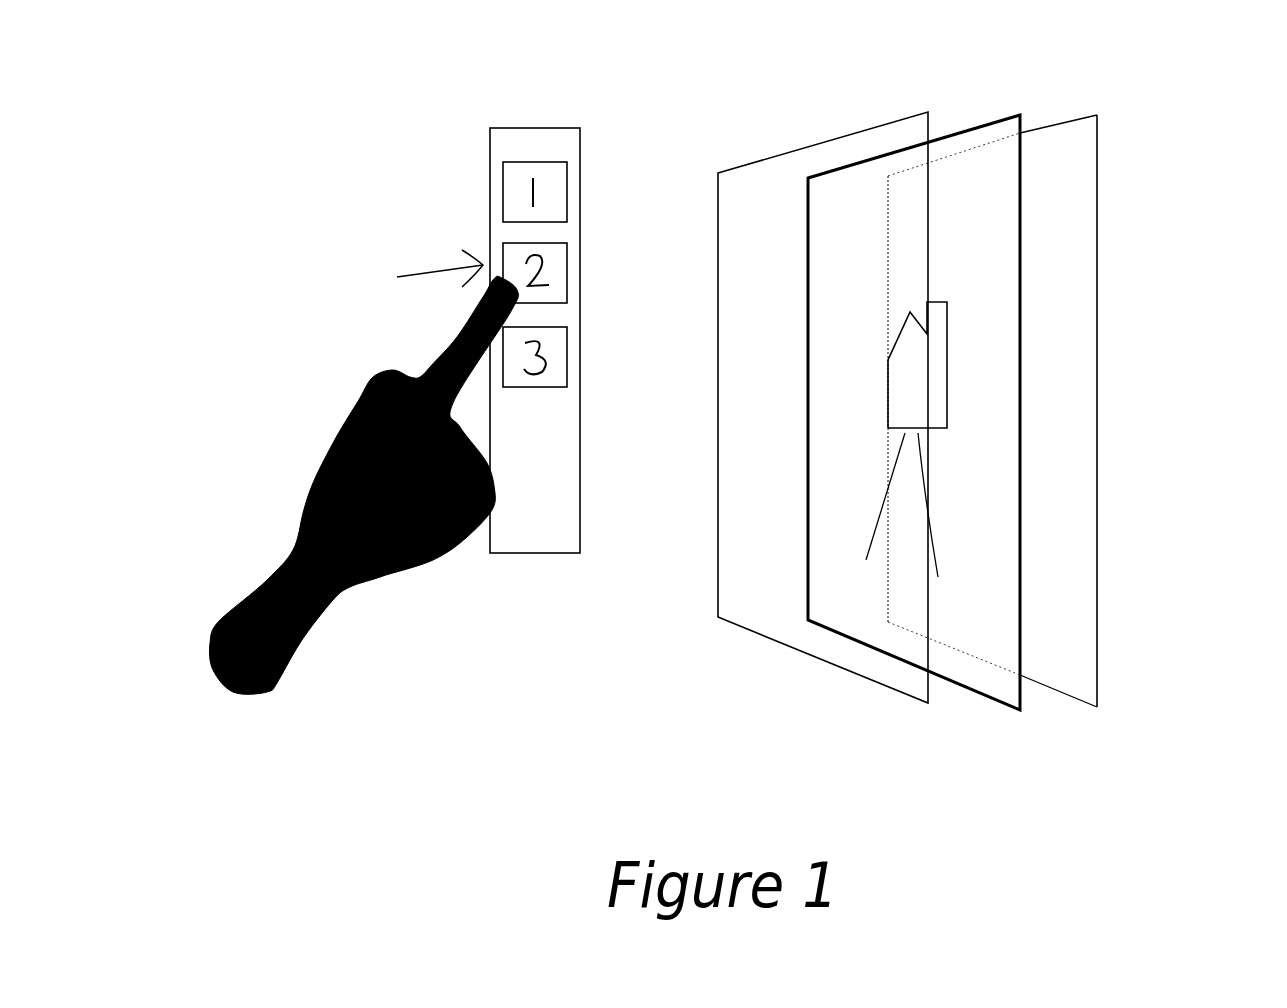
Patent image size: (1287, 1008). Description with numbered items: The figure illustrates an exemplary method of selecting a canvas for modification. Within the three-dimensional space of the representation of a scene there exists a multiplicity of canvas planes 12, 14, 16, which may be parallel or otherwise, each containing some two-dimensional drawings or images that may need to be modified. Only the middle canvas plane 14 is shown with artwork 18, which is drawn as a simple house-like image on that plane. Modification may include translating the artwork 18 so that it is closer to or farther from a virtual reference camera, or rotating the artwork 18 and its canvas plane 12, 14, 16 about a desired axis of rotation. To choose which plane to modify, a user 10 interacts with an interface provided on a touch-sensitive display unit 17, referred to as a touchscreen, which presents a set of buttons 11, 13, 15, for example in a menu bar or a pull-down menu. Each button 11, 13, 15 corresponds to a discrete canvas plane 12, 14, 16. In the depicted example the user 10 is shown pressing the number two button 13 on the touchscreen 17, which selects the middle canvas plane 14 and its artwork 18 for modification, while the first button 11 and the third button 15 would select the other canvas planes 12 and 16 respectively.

The user 10 is at (245, 697).
The button 11 is at (570, 190).
The canvas plane 12 is at (782, 153).
The number 2 button 13 is at (570, 273).
The middle canvas plane 14 is at (963, 128).
The button 15 is at (570, 355).
The canvas plane 16 is at (1100, 175).
The touch-sensitive display unit 17 is at (535, 560).
The artwork 18 is at (990, 366).